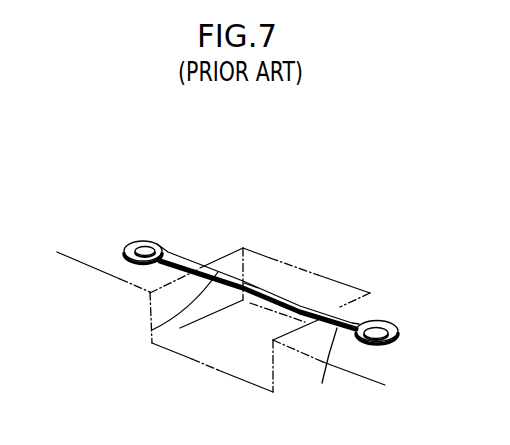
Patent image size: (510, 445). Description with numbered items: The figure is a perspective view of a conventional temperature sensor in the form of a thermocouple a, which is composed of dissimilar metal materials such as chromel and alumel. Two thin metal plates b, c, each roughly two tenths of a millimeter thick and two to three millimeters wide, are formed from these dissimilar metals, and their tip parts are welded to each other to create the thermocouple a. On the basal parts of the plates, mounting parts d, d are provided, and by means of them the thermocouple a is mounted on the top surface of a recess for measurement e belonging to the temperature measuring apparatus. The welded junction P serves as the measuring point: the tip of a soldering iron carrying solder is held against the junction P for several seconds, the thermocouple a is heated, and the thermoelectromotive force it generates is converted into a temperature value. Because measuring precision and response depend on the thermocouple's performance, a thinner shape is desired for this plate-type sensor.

The thermocouple a is at (193, 260).
The metal plate b is at (153, 325).
The metal plate c is at (326, 366).
The mounting part d is at (132, 242).
The recess for measurement e is at (330, 292).
The junction P is at (251, 284).